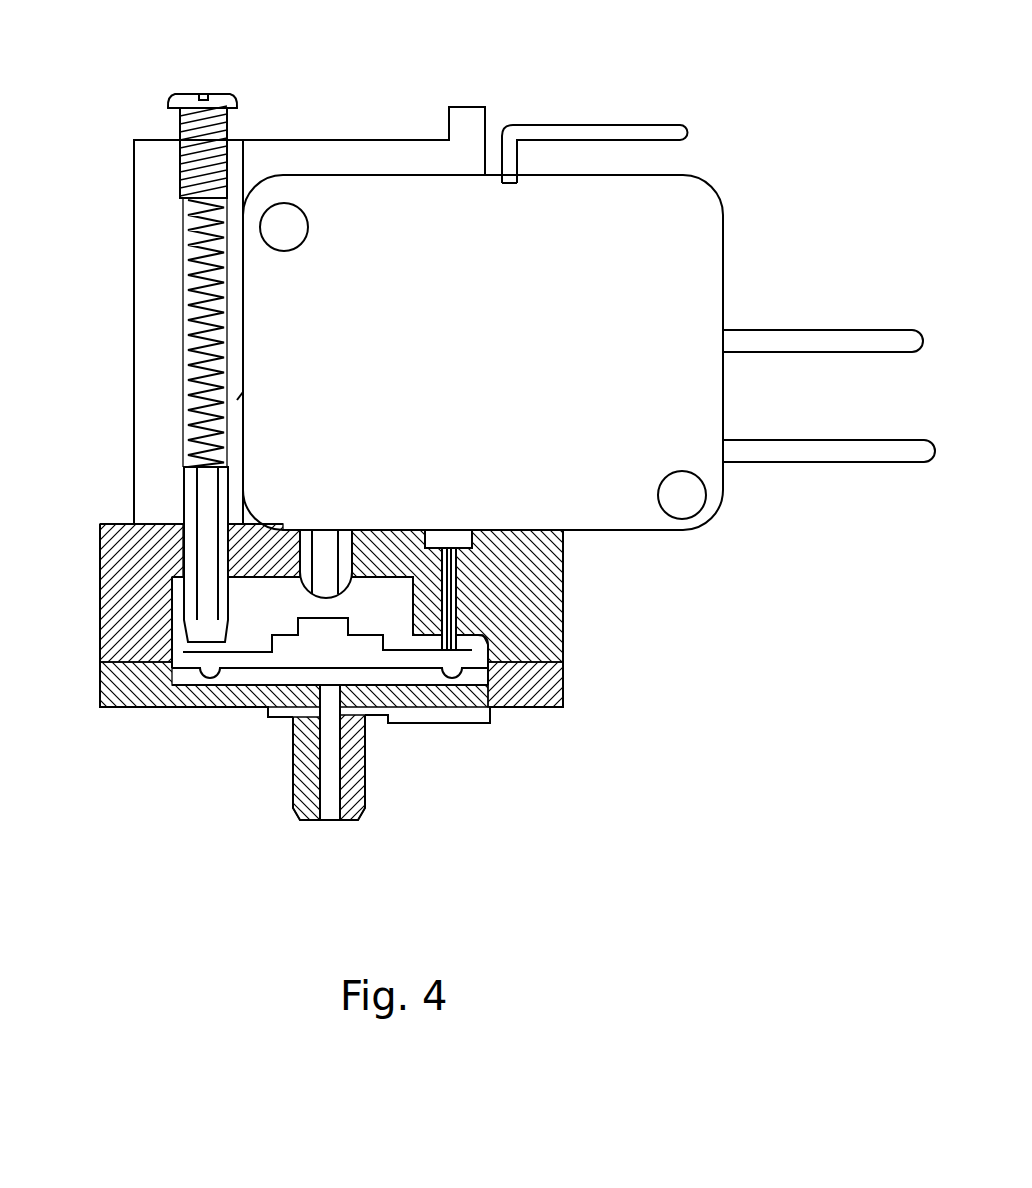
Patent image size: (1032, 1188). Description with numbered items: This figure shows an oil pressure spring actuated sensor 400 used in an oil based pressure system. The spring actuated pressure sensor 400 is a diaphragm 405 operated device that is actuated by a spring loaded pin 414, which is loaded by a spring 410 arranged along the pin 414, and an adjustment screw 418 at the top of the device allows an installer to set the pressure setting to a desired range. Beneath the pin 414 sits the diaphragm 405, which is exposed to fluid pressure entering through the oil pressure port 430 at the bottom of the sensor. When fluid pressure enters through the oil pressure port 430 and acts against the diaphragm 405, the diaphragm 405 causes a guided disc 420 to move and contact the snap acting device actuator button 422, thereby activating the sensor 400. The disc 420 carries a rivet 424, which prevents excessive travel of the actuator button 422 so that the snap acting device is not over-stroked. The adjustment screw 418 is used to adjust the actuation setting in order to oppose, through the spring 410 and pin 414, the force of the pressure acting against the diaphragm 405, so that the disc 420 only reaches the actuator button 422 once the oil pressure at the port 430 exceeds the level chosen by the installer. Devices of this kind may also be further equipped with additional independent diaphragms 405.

The spring actuated pressure sensor 400 is at (99, 605).
The diaphragm 405 is at (433, 672).
The spring 410 is at (183, 293).
The spring loaded pin 414 is at (200, 512).
The adjustment screw 418 is at (207, 92).
The guided disc 420 is at (348, 622).
The snap acting device actuator button 422 is at (328, 548).
The rivet 424 is at (458, 630).
The oil pressure port 430 is at (327, 812).